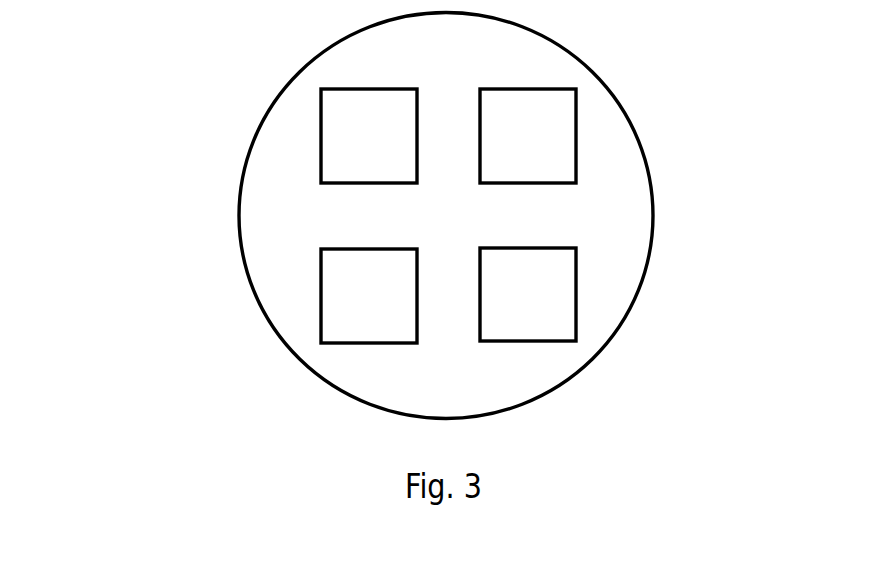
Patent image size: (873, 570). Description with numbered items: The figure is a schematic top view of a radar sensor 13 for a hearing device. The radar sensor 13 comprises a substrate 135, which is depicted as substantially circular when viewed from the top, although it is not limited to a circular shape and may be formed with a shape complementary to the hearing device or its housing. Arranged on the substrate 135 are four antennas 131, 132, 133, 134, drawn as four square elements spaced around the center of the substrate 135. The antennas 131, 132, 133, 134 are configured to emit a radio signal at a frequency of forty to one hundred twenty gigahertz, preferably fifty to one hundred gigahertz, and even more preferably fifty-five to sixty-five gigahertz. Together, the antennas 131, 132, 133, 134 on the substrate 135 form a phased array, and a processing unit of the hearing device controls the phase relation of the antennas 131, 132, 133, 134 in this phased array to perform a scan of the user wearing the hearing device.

The radar sensor 13 is at (403, 216).
The antenna 131 is at (321, 138).
The antenna 132 is at (321, 317).
The antenna 133 is at (576, 136).
The antenna 134 is at (576, 296).
The substrate 135 is at (240, 195).